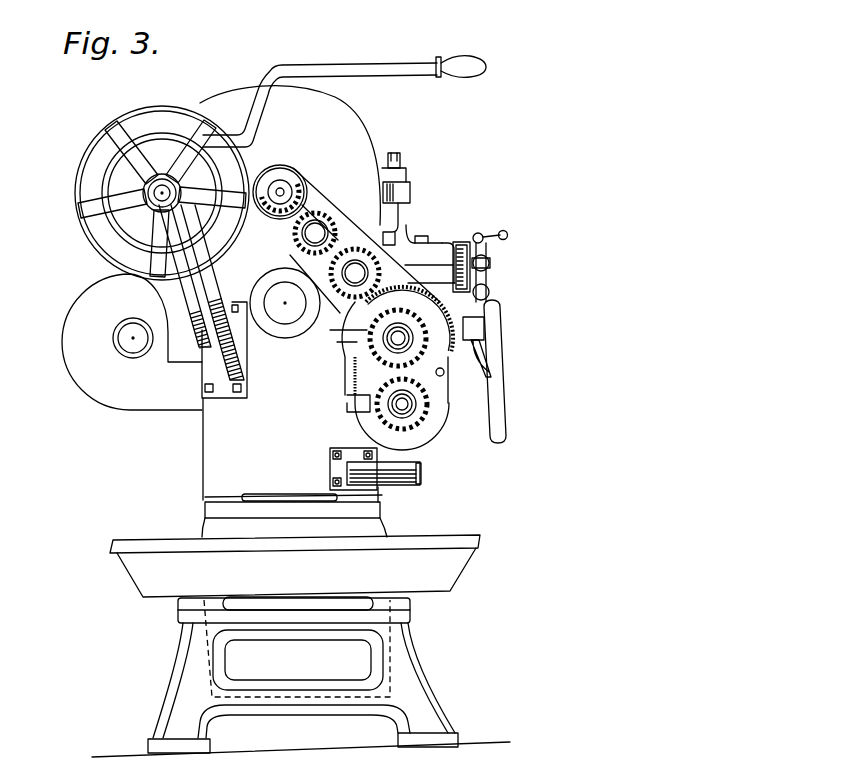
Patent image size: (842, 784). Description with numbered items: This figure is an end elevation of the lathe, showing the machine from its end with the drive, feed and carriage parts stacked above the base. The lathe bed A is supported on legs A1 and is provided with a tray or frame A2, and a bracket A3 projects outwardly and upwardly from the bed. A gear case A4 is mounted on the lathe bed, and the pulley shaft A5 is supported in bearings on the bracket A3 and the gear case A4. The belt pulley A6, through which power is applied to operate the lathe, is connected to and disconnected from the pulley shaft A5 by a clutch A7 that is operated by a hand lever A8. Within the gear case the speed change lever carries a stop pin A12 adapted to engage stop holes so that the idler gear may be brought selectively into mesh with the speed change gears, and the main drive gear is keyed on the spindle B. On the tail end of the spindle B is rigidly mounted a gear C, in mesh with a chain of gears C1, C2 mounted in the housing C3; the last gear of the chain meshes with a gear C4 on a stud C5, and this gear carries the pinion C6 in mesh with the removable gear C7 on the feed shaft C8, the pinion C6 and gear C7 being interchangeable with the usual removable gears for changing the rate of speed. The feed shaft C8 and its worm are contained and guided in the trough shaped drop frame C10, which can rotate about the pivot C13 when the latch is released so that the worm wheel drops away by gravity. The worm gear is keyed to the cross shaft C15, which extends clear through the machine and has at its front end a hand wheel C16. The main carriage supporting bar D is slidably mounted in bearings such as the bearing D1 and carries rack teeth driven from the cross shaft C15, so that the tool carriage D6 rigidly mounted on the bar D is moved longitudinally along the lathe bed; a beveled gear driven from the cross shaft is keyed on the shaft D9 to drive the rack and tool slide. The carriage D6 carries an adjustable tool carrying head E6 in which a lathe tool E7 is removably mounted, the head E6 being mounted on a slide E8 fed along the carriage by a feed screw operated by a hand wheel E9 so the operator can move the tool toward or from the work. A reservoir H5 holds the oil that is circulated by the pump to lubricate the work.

The lathe bed A is at (214, 460).
The legs A1 is at (172, 716).
The tray or frame A2 is at (153, 580).
The bracket A3 is at (200, 318).
The gear case A4 is at (241, 106).
The pulley shaft A5 is at (160, 192).
The belt pulley A6 is at (130, 135).
The clutch A7 is at (135, 228).
The hand lever A8 is at (384, 60).
The stop pin A12 is at (286, 176).
The spindle B is at (288, 186).
The gear C is at (310, 178).
The gear C1 is at (323, 220).
The gear C2 is at (355, 262).
The housing C3 is at (345, 302).
The gear C4 is at (372, 385).
The stud C5 is at (448, 360).
The pinion C6 is at (481, 348).
The removable gear C7 is at (418, 387).
The feed shaft C8 is at (410, 410).
The drop frame C10 is at (402, 450).
The pivot C13 is at (424, 470).
The cross shaft C15 is at (478, 322).
The hand wheel C16 is at (495, 340).
The main carriage supporting bar D is at (280, 290).
The bearing D1 is at (287, 333).
The tool carriage D6 is at (420, 268).
The shaft D9 is at (128, 338).
The adjustable tool carrying head E6 is at (395, 215).
The lathe tool E7 is at (403, 208).
The slide E8 is at (435, 247).
The hand wheel E9 is at (500, 236).
The reservoir H5 is at (383, 630).